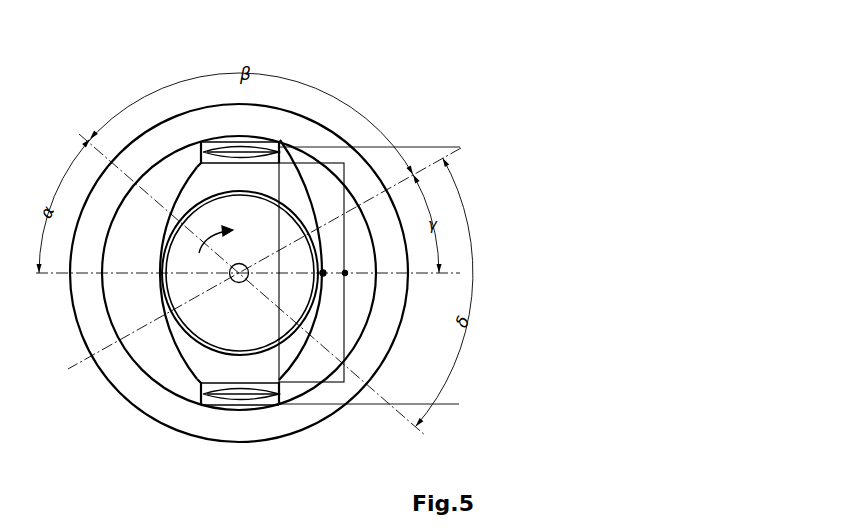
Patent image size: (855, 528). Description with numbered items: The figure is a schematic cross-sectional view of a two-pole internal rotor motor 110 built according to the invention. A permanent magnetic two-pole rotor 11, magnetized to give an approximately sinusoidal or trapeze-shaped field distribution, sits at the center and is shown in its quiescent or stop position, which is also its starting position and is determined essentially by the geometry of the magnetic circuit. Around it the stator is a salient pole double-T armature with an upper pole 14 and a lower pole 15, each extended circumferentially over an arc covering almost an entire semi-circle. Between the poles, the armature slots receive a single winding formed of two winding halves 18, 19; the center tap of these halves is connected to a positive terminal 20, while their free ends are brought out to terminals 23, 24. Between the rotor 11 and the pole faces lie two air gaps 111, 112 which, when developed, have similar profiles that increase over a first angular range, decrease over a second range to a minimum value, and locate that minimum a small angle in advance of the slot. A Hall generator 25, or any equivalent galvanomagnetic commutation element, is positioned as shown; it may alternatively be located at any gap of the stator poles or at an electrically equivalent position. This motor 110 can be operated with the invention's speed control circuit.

The two-pole internal rotor motor 110 is at (137, 264).
The upper pole 14 is at (188, 184).
The lower pole 15 is at (181, 341).
The winding half 18 is at (203, 152).
The winding half 19 is at (203, 394).
The rotor 11 is at (174, 283).
The air gap 111 is at (229, 193).
The air gap 112 is at (292, 315).
The Hall generator 25 is at (326, 278).
The positive terminal 20 is at (466, 272).
The terminal 23 is at (466, 147).
The terminal 24 is at (465, 403).